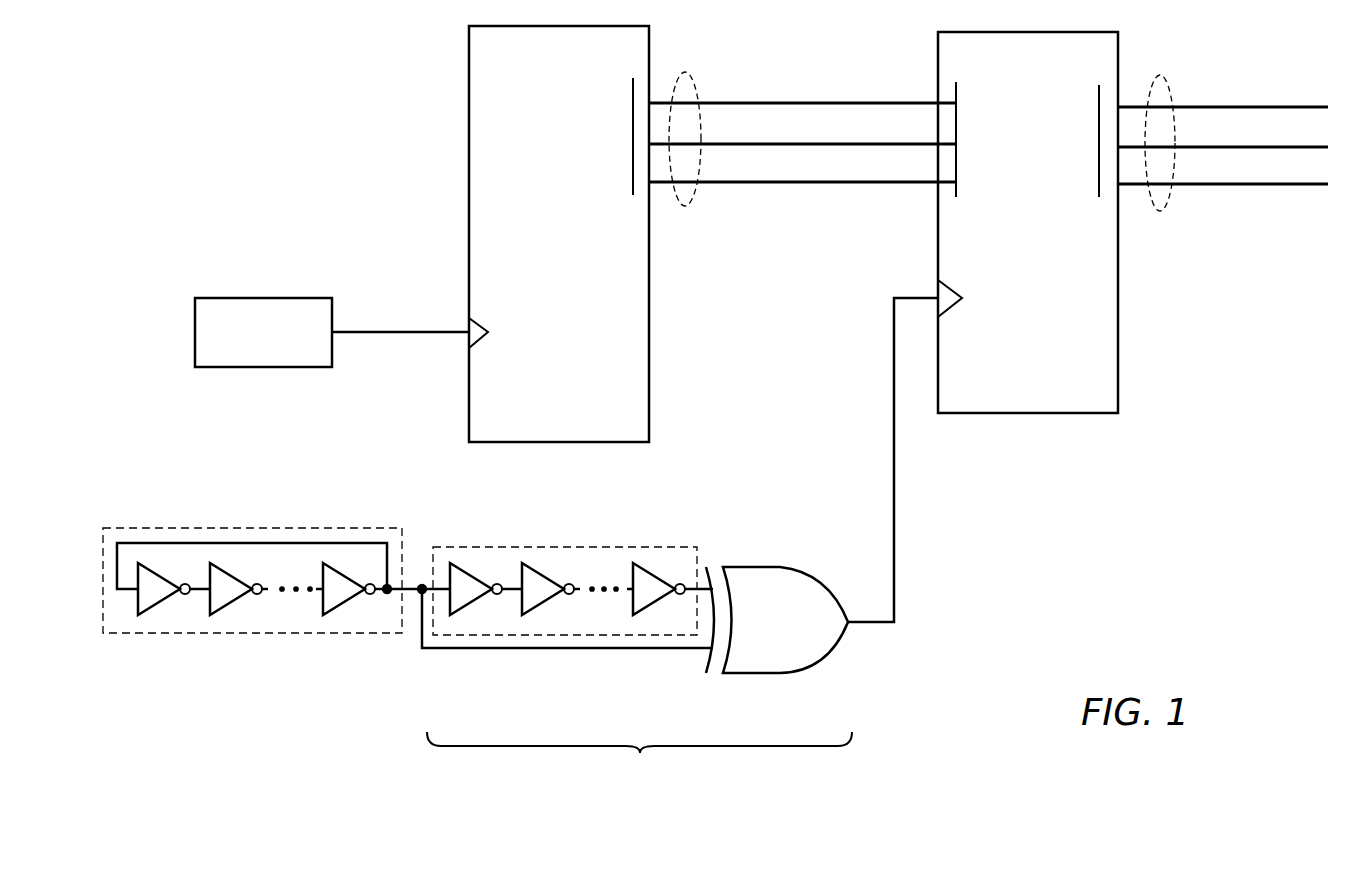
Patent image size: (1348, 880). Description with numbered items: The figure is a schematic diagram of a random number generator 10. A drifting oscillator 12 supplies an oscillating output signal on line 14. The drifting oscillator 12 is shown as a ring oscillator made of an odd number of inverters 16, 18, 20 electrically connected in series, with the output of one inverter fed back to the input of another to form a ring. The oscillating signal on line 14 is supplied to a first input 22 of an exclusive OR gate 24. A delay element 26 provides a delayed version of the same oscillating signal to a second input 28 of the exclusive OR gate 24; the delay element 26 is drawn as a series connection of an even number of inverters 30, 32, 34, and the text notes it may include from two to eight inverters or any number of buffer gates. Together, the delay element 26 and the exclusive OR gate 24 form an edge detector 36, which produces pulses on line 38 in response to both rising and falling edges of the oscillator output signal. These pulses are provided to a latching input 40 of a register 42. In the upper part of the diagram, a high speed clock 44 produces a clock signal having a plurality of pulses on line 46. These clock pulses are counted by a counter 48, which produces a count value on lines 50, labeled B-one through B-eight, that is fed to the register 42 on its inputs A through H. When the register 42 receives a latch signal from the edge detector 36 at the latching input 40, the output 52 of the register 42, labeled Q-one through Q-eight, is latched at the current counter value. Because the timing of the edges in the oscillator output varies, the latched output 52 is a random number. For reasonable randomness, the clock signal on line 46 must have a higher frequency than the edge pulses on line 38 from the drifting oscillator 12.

The random number generator 10 is at (1128, 620).
The drifting oscillator 12 is at (226, 528).
The line 14 is at (412, 585).
The inverter 16 is at (163, 602).
The inverter 18 is at (237, 602).
The inverter 20 is at (350, 602).
The first input 22 is at (678, 652).
The exclusive OR gate 24 is at (813, 663).
The delay element 26 is at (577, 547).
The second input 28 is at (692, 580).
The inverter 30 is at (472, 605).
The inverter 32 is at (545, 605).
The inverter 34 is at (654, 605).
The edge detector 36 is at (639, 759).
The line 38 is at (894, 542).
The latching input 40 is at (938, 290).
The register 42 is at (1118, 322).
The high speed clock 44 is at (262, 298).
The line 46 is at (397, 337).
The counter 48 is at (469, 182).
The lines 50 is at (683, 72).
The output 52 is at (1155, 75).